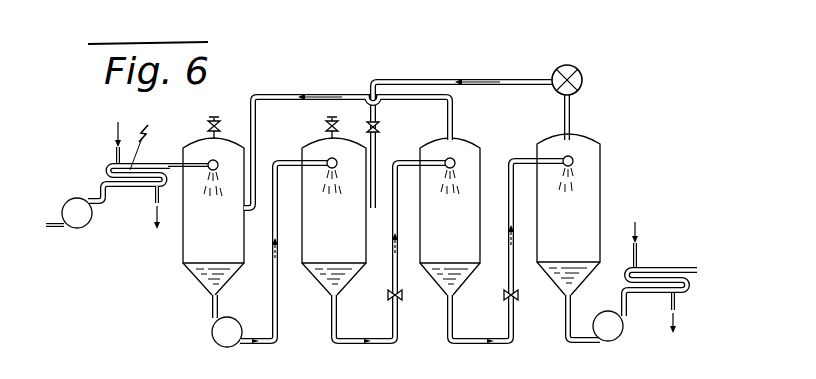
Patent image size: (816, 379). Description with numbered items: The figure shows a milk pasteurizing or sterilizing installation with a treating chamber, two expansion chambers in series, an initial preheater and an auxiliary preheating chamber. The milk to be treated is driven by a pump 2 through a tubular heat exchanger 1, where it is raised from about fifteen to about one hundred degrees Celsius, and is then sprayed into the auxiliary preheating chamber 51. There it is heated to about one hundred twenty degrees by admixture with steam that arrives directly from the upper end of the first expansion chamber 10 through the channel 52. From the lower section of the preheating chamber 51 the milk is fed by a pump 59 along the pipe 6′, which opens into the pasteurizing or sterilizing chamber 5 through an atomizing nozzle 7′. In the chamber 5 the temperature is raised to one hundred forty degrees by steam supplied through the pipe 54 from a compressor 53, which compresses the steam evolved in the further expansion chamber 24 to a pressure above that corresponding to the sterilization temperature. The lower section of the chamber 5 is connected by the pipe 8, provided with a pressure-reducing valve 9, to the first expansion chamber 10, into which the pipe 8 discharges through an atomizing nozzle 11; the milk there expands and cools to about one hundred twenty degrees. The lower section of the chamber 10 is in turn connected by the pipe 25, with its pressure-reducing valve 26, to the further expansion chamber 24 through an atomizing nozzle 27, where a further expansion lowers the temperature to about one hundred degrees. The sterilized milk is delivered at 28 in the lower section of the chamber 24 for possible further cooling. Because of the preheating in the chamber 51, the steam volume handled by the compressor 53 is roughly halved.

The tubular heat exchanger 1 is at (129, 175).
The pump 2 is at (83, 215).
The auxiliary preheating chamber 51 is at (203, 218).
The pump 59 is at (222, 334).
The pipe 6′ is at (258, 345).
The pasteurizing or sterilizing chamber 5 is at (321, 213).
The atomizing nozzle 7′ is at (327, 160).
The pipe 8 is at (345, 344).
The pressure-reducing valve 9 is at (399, 297).
The first expansion chamber 10 is at (445, 203).
The atomizing nozzle 11 is at (455, 157).
The channel 52 is at (294, 96).
The pipe 54 is at (442, 80).
The compressor 53 is at (581, 78).
The atomizing nozzle 27 is at (572, 158).
The further expansion chamber 24 is at (584, 192).
The pipe 25 is at (481, 344).
The pressure-reducing valve 26 is at (516, 298).
The sterilized milk delivery 28 is at (571, 307).